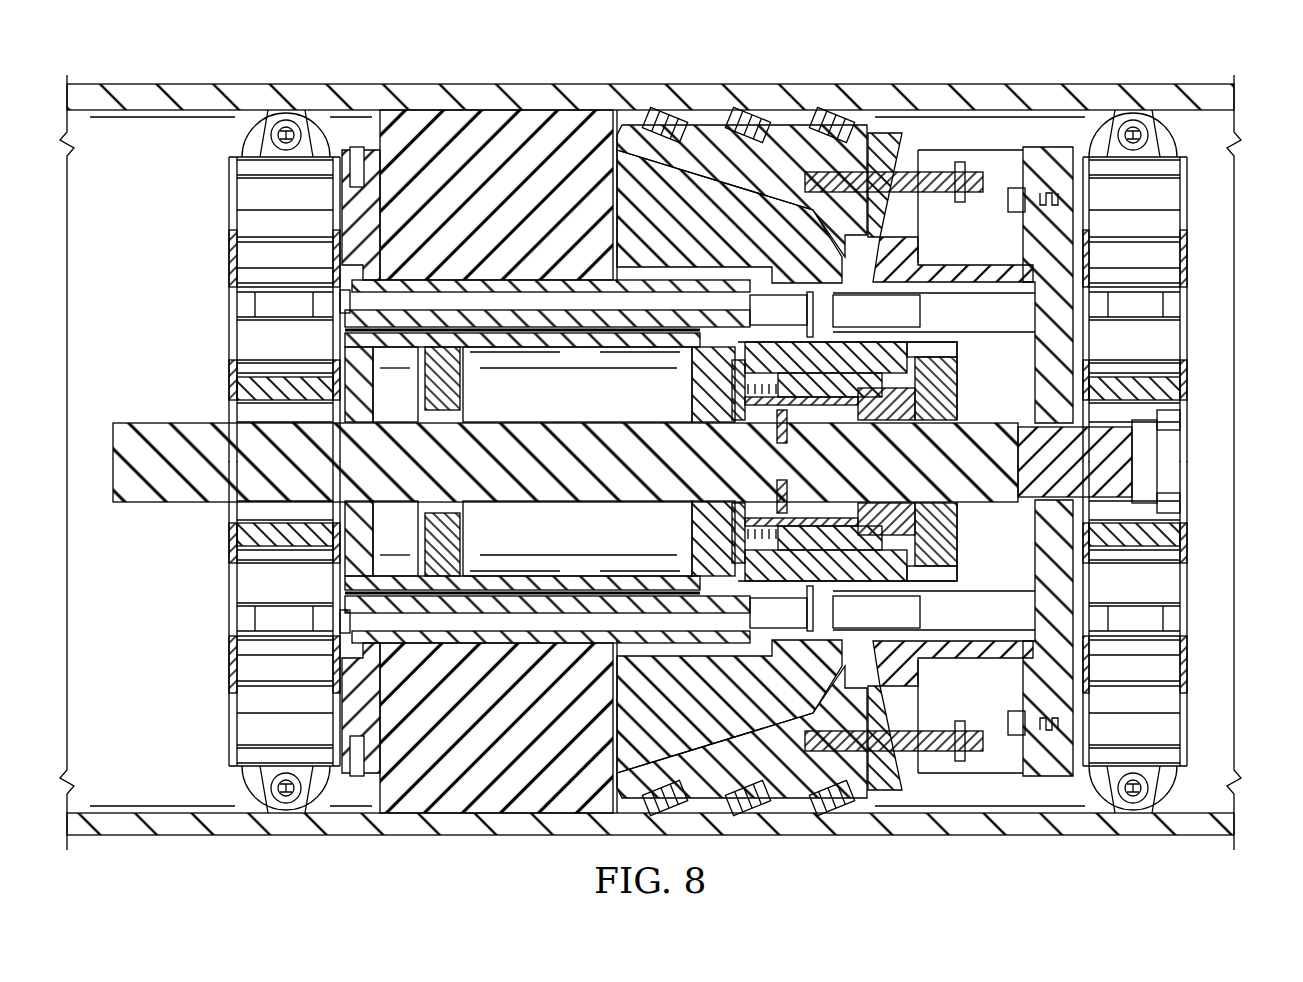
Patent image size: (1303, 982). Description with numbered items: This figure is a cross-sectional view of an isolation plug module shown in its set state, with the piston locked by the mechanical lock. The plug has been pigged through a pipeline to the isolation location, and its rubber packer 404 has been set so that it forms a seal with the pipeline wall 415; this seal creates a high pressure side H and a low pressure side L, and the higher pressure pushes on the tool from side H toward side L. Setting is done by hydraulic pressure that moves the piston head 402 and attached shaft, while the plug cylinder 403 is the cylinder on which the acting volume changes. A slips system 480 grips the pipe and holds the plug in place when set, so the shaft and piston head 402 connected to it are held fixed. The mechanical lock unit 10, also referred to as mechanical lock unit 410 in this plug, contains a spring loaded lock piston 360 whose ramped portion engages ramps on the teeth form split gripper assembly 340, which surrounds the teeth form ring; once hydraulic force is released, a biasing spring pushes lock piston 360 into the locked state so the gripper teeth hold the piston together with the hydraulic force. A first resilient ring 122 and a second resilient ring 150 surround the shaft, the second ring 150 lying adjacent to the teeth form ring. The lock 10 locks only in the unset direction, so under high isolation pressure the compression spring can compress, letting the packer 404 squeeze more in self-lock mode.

The mechanical lock unit 10 is at (993, 369).
The first resilient ring 122 is at (830, 428).
The second resilient ring 150 is at (940, 402).
The teeth form split gripper assembly 340 is at (900, 402).
The spring loaded lock piston 360 is at (888, 372).
The plug cylinder / piston head 402 is at (452, 378).
The plug cylinder 403 is at (568, 338).
The rubber packer 404 is at (530, 110).
The mechanical lock unit 410 is at (947, 326).
The pipeline wall 415 is at (988, 86).
The slips system 480 is at (755, 102).
The high pressure side H is at (132, 254).
The low pressure side L is at (1206, 262).